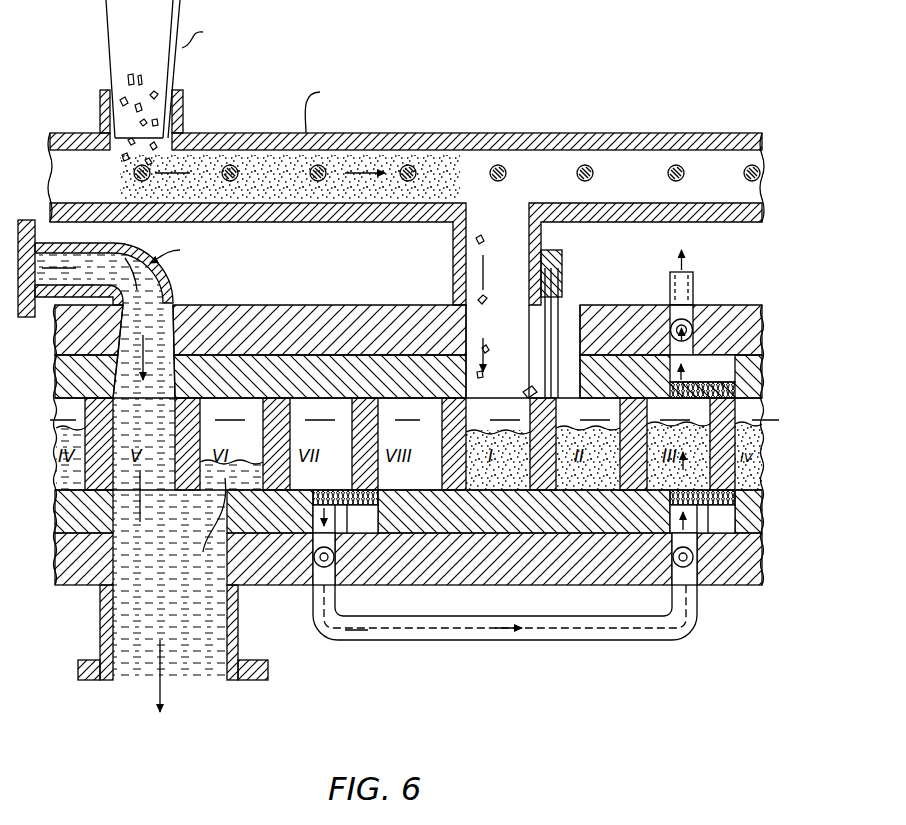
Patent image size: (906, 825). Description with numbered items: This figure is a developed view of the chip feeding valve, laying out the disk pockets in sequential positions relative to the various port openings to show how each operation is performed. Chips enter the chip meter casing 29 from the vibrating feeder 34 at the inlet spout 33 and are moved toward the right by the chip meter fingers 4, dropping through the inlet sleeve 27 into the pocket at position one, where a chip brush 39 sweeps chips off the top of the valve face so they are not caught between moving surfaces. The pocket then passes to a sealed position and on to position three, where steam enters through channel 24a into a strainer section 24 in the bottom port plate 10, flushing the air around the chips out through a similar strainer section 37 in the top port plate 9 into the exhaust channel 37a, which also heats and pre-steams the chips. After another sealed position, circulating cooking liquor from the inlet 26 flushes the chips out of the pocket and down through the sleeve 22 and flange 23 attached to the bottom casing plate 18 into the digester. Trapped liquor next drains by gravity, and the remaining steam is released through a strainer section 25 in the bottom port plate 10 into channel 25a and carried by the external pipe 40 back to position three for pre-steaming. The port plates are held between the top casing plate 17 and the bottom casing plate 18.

The vibrating feeder 34 is at (105, 33).
The inlet spout 33 is at (100, 100).
The chip meter casing 29 is at (762, 138).
The chip meter fingers 4 is at (684, 176).
The inlet sleeve 27 is at (455, 271).
The chip brush 39 is at (565, 306).
The strainer section 37 is at (703, 342).
The exhaust channel 37a is at (670, 300).
The top casing plate 17 is at (762, 326).
The top port plate 9 is at (762, 372).
The inlet 26 is at (176, 288).
The bottom port plate 10 is at (762, 517).
The bottom casing plate 18 is at (762, 562).
The sleeve 22 is at (100, 621).
The flange 23 is at (80, 673).
The strainer section 25 is at (347, 540).
The channel 25a is at (312, 570).
The external pipe 40 is at (500, 644).
The strainer section 24 is at (712, 520).
The channel 24a is at (707, 540).